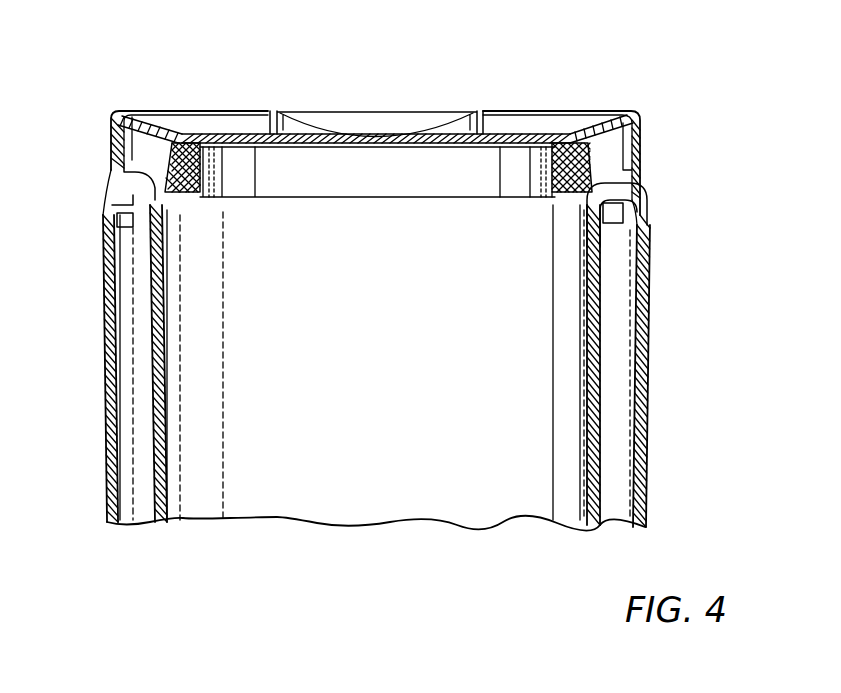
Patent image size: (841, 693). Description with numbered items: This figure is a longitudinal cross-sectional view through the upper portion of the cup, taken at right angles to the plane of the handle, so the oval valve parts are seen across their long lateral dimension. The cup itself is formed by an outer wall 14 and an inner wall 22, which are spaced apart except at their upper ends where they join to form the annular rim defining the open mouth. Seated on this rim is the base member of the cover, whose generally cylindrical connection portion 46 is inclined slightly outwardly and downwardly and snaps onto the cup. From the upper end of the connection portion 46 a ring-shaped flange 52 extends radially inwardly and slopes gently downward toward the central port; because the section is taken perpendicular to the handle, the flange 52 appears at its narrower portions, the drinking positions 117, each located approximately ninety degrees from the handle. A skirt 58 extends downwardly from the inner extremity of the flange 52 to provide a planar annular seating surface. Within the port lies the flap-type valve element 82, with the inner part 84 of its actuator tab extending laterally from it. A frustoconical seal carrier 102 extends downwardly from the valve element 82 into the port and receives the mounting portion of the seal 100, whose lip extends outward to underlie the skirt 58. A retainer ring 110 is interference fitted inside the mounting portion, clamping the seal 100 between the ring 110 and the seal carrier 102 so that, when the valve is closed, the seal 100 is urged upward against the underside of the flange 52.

The outer wall 14 is at (650, 326).
The inner wall 22 is at (590, 392).
The connection portion 46 is at (645, 157).
The flange 52 is at (162, 108).
The skirt 58 is at (606, 110).
The valve element 82 is at (520, 110).
The inner part of actuator tab 84 is at (384, 118).
The seal 100 is at (543, 180).
The seal carrier 102 is at (172, 200).
The retainer ring 110 is at (200, 167).
The drinking positions 117 is at (118, 108).